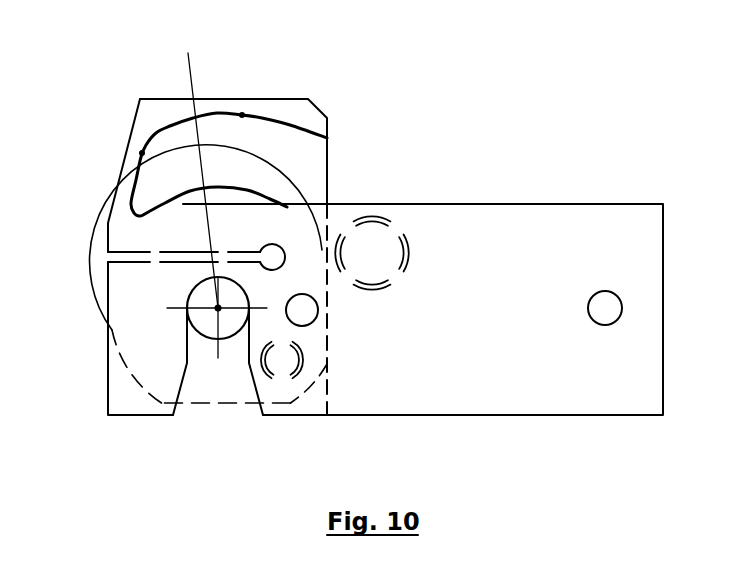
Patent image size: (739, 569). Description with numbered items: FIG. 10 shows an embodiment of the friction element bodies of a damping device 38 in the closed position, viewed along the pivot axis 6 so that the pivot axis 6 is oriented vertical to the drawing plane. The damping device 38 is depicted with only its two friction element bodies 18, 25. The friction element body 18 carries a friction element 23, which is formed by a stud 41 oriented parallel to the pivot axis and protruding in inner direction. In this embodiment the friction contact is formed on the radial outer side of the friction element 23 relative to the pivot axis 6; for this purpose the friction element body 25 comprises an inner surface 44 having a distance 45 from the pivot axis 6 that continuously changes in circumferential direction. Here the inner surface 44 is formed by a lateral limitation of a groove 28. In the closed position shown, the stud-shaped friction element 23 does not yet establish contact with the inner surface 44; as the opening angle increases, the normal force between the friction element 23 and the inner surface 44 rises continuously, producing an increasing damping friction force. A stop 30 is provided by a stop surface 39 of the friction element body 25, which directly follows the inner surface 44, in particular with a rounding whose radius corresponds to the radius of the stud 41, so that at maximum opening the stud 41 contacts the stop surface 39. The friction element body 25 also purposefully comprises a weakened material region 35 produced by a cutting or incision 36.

The pivot axis 6 is at (217, 307).
The friction element body 18 is at (516, 360).
The friction element 23 is at (403, 208).
The friction element body 25 is at (116, 172).
The groove 28 is at (303, 170).
The stop 30 is at (175, 145).
The weakened material region 35 is at (316, 272).
The cutting or incision 36 is at (112, 252).
The damping device 38 is at (354, 153).
The stop surface 39 is at (144, 153).
The stud 41 is at (383, 233).
The inner surface 44 is at (243, 117).
The distance 45 is at (200, 72).